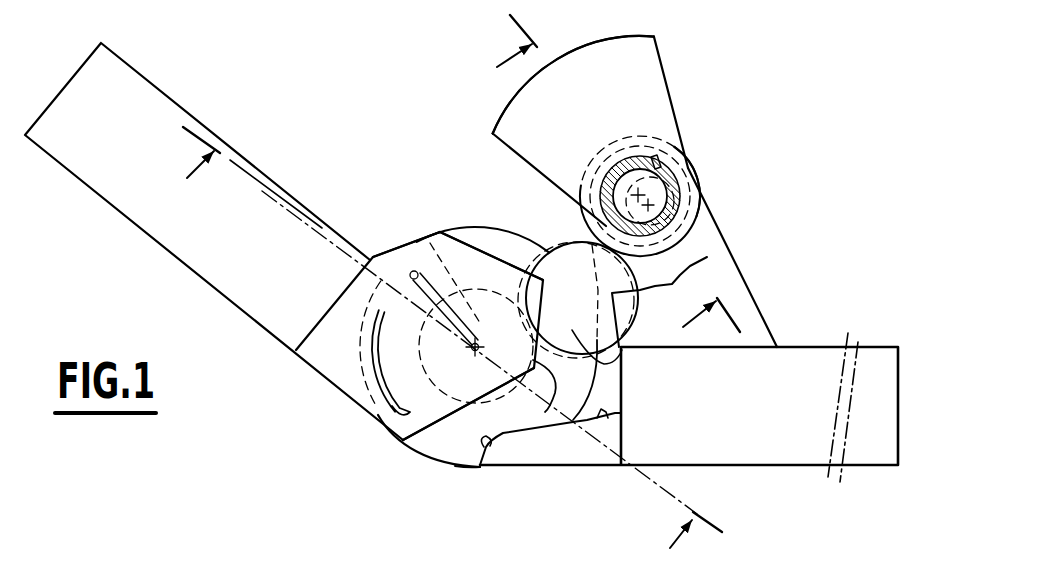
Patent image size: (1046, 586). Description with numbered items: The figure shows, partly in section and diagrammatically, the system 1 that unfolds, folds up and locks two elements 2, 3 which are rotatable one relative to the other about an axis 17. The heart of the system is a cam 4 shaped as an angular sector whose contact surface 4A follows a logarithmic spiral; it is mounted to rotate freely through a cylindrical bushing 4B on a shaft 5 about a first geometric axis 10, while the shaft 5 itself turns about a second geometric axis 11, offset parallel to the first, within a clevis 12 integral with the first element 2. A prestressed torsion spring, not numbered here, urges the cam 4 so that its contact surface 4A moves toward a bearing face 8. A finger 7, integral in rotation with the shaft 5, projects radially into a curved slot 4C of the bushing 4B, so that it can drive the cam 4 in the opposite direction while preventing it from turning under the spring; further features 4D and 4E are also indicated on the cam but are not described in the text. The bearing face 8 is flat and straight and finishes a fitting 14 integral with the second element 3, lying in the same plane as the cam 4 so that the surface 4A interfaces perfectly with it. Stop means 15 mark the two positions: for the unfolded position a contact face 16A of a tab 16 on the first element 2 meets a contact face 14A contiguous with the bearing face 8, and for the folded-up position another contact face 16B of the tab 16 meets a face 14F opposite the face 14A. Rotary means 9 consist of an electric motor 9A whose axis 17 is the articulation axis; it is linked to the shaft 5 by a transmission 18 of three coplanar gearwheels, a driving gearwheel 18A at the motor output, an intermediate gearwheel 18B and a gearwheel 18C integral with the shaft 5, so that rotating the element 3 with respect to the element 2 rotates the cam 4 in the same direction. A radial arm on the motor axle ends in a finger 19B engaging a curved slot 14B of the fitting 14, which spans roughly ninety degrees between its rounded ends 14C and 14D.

The system 1 is at (336, 120).
The first element 2 is at (795, 453).
The second element 3 is at (127, 214).
The cam 4 is at (653, 50).
The contact surface 4A is at (583, 43).
The cylindrical bushing 4B is at (687, 207).
The curved slot 4C is at (613, 137).
The key 4D is at (660, 163).
The hub bore contour 4E is at (587, 185).
The shaft 5 is at (680, 157).
The finger 7 is at (640, 147).
The bearing face 8 is at (565, 420).
The rotary means 9 is at (462, 478).
The electric motor 9A is at (476, 228).
The first geometric axis 10 is at (673, 243).
The second geometric axis 11 is at (613, 170).
The clevis 12 is at (763, 313).
The fitting 14 is at (315, 357).
The contact face 14A is at (433, 427).
The curved slot 14B is at (360, 370).
The rounded end 14C is at (392, 425).
The rounded end 14D is at (420, 243).
The face 14F is at (483, 212).
The stop means 15 is at (477, 472).
The tab 16 is at (580, 453).
The contact face 16A is at (483, 470).
The contact face 16B is at (597, 443).
The axis 17 is at (473, 357).
The transmission 18 is at (547, 237).
The driving gearwheel 18A is at (430, 230).
The intermediate gearwheel 18B is at (600, 378).
The gearwheel 18C is at (697, 180).
The finger 19B is at (409, 277).